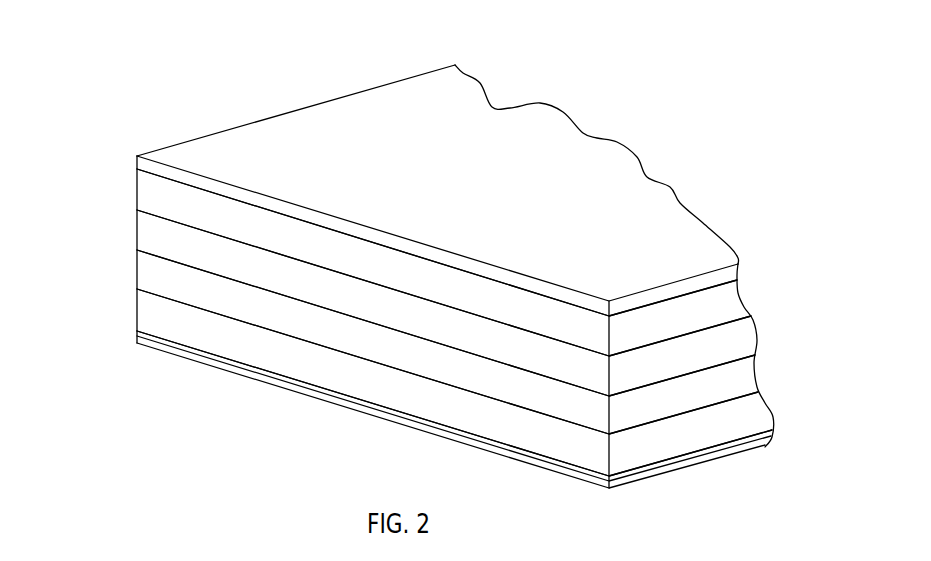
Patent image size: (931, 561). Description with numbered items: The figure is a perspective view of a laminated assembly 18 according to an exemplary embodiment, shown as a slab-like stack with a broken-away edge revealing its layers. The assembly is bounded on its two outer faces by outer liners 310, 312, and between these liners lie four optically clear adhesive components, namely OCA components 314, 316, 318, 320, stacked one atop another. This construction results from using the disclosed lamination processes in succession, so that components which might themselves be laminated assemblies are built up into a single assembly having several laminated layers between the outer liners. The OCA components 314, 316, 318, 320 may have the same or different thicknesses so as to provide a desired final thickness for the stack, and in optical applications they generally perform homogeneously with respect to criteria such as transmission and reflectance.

The laminated assembly 18 is at (226, 85).
The outer liner 310 is at (143, 163).
The OCA component 314 is at (140, 193).
The OCA component 316 is at (140, 232).
The OCA component 318 is at (140, 267).
The OCA component 320 is at (140, 306).
The outer liner 312 is at (143, 336).